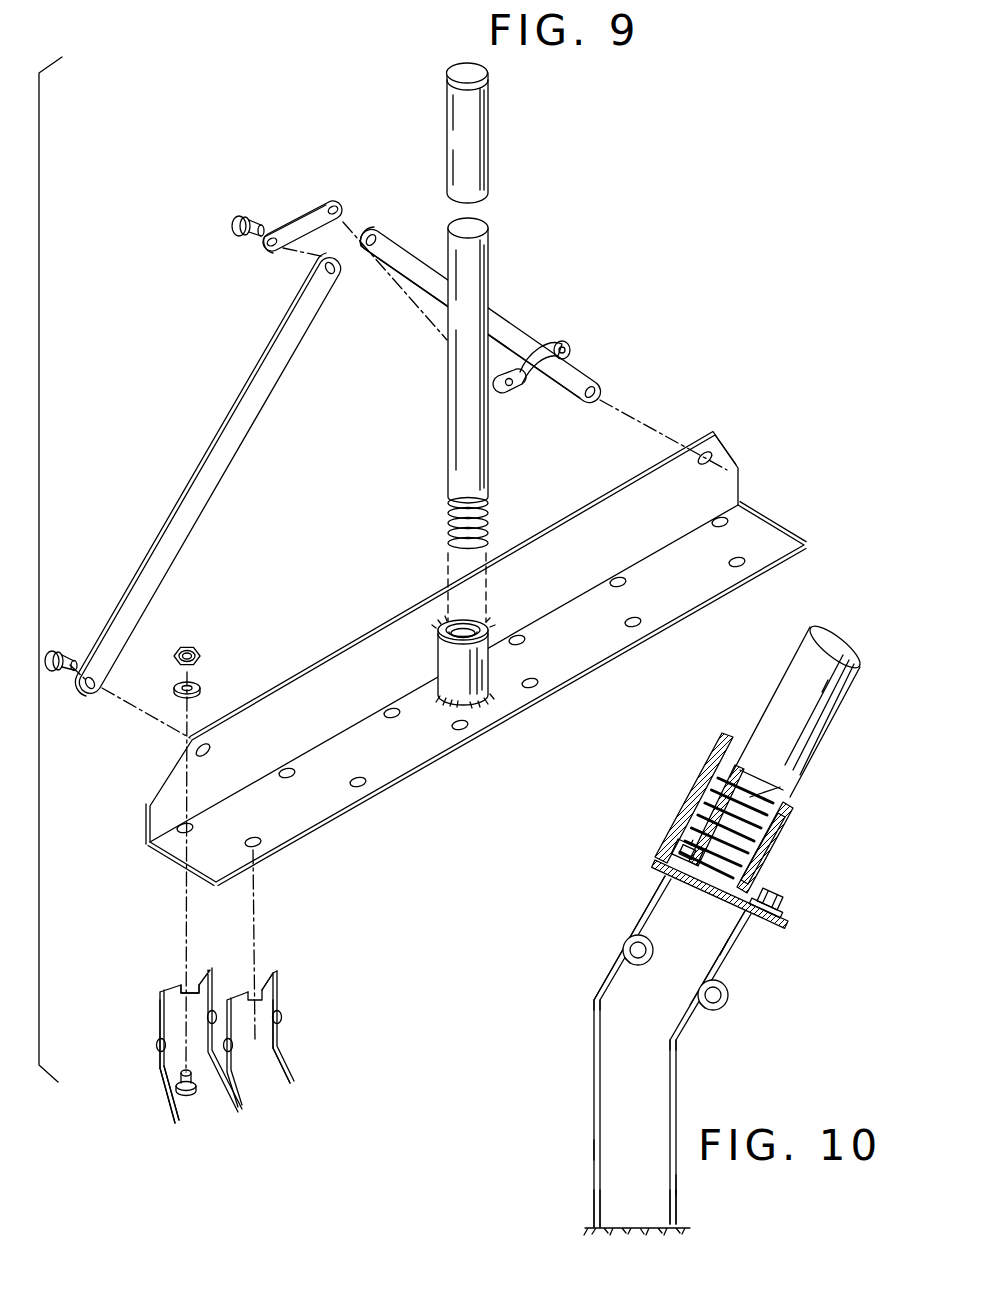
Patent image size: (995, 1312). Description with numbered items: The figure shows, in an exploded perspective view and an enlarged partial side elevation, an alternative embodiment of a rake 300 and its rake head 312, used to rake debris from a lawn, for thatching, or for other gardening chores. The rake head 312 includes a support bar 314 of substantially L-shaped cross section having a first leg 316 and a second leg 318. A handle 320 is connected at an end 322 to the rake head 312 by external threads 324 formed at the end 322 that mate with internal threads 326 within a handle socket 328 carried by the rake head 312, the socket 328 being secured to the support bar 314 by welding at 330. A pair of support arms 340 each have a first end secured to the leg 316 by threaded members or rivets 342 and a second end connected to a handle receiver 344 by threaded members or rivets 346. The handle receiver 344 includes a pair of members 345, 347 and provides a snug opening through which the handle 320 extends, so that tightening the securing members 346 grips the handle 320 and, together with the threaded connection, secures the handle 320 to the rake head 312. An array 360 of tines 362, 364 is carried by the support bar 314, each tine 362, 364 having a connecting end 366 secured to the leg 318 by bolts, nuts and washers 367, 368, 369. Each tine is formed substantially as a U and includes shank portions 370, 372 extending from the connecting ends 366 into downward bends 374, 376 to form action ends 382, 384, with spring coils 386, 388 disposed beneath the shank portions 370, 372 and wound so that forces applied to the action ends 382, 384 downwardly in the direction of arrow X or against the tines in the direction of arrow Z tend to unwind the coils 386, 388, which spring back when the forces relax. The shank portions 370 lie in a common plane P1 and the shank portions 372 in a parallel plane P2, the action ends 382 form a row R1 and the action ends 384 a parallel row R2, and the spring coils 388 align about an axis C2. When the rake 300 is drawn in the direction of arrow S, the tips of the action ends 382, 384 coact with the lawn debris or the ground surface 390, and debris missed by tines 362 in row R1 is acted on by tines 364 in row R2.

In FIG. 9, the rake 300 is at (614, 196).
In FIG. 9, the rake head 312 is at (512, 642).
In FIG. 9, the support bar 314 is at (742, 473).
In FIG. 9, the first leg 316 is at (680, 518).
In FIG. 9, the second leg 318 is at (697, 612).
In FIG. 9, the handle 320 is at (488, 108).
In FIG. 10, the handle 320 is at (812, 662).
In FIG. 9, the end 322 is at (474, 383).
In FIG. 10, the end 322 is at (807, 773).
In FIG. 9, the external threads 324 is at (481, 513).
In FIG. 10, the external threads 324 is at (787, 790).
In FIG. 9, the internal threads 326 is at (463, 620).
In FIG. 10, the internal threads 326 is at (777, 830).
In FIG. 9, the handle socket 328 is at (474, 660).
In FIG. 10, the handle socket 328 is at (760, 813).
In FIG. 9, the welding 330 is at (444, 616).
In FIG. 9, the support arms 340 is at (507, 327).
In FIG. 9, the threaded members or rivets 342 is at (60, 652).
In FIG. 9, the handle receiver 344 is at (500, 245).
In FIG. 9, the member 345 is at (562, 353).
In FIG. 9, the threaded members or rivets 346 is at (243, 214).
In FIG. 9, the member 347 is at (300, 220).
In FIG. 10, the array 360 is at (671, 1053).
In FIG. 9, the tine 362 is at (309, 1024).
In FIG. 10, the tine 362 is at (761, 1069).
In FIG. 9, the tine 364 is at (197, 1039).
In FIG. 10, the tine 364 is at (596, 1051).
In FIG. 9, the connecting end 366 is at (157, 1013).
In FIG. 9, the bolt 367 is at (192, 1094).
In FIG. 10, the bolt 367 is at (757, 930).
In FIG. 9, the nut 368 is at (202, 688).
In FIG. 10, the nut 368 is at (775, 916).
In FIG. 9, the washer 369 is at (197, 656).
In FIG. 10, the washer 369 is at (774, 897).
In FIG. 9, the shank portion 370 is at (268, 985).
In FIG. 10, the shank portion 370 is at (718, 947).
In FIG. 9, the shank portion 372 is at (156, 1030).
In FIG. 10, the shank portion 372 is at (625, 926).
In FIG. 9, the downward bend 374 is at (279, 1040).
In FIG. 10, the downward bend 374 is at (679, 1041).
In FIG. 9, the downward bend 376 is at (160, 1074).
In FIG. 10, the downward bend 376 is at (592, 990).
In FIG. 9, the action end 382 is at (288, 1074).
In FIG. 10, the action end 382 is at (680, 1215).
In FIG. 9, the action end 384 is at (170, 1113).
In FIG. 10, the action end 384 is at (592, 1203).
In FIG. 9, the spring coil 386 is at (283, 1014).
In FIG. 10, the spring coil 386 is at (723, 1010).
In FIG. 9, the spring coil 388 is at (156, 1053).
In FIG. 10, the spring coil 388 is at (625, 967).
In FIG. 10, the ground surface 390 is at (590, 1228).
In FIG. 10, the plane P1 is at (723, 960).
In FIG. 10, the plane P2 is at (643, 887).
In FIG. 10, the axis C2 is at (622, 950).
In FIG. 10, the row R1 is at (678, 1185).
In FIG. 10, the row R2 is at (592, 1147).
In FIG. 10, the arrow X is at (430, 1060).
In FIG. 10, the arrow Z is at (690, 1103).
In FIG. 10, the arrow S is at (605, 1252).